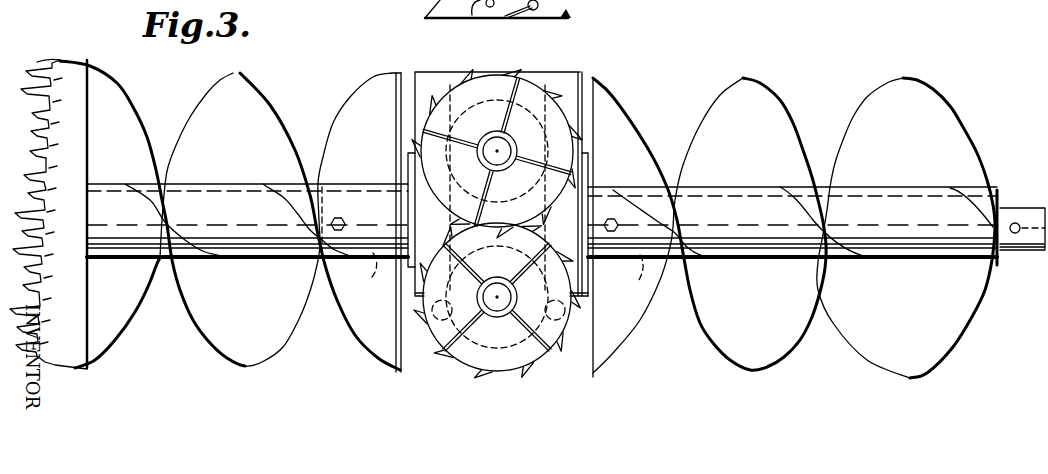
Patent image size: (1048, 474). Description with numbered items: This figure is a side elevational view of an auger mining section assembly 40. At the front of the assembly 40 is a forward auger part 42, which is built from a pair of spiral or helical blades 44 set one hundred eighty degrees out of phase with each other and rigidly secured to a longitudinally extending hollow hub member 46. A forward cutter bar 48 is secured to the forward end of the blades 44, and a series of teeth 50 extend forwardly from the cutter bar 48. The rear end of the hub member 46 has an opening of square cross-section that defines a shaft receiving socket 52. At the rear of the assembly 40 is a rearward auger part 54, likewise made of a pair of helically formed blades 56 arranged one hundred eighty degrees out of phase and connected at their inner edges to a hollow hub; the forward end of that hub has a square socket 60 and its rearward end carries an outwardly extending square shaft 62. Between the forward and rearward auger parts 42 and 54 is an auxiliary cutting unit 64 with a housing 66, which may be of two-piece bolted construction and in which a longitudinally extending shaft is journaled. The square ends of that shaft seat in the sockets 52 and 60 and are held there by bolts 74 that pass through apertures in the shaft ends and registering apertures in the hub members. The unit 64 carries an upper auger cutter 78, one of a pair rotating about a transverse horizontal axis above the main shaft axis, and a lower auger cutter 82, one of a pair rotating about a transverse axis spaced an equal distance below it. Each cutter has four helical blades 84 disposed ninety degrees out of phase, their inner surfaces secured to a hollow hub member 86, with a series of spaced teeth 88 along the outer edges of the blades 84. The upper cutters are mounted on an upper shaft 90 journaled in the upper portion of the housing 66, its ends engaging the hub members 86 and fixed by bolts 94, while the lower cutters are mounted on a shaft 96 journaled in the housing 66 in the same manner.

The auger mining section assembly 40 is at (694, 55).
The forward auger part 42 is at (287, 110).
The spiral or helical blades 44 is at (193, 107).
The hollow hub member 46 is at (228, 243).
The forward cutter bar 48 is at (48, 131).
The teeth 50 is at (33, 70).
The shaft receiving socket 52 is at (372, 277).
The rearward auger part 54 is at (786, 95).
The spiral or helically formed blades 56 is at (781, 120).
The square socket 60 is at (637, 283).
The square shaft 62 is at (1005, 208).
The auxiliary cutting unit 64 is at (582, 70).
The housing 66 is at (407, 190).
The bolts 74 is at (346, 224).
The auger cutter 78 is at (478, 70).
The auger cutter 82 is at (537, 372).
The helical or spiral blades 84 is at (517, 110).
The hollow hub member 86 is at (500, 173).
The teeth 88 is at (428, 345).
The upper shaft 90 is at (497, 148).
The bolts 94 is at (478, 14).
The shaft 96 is at (492, 293).